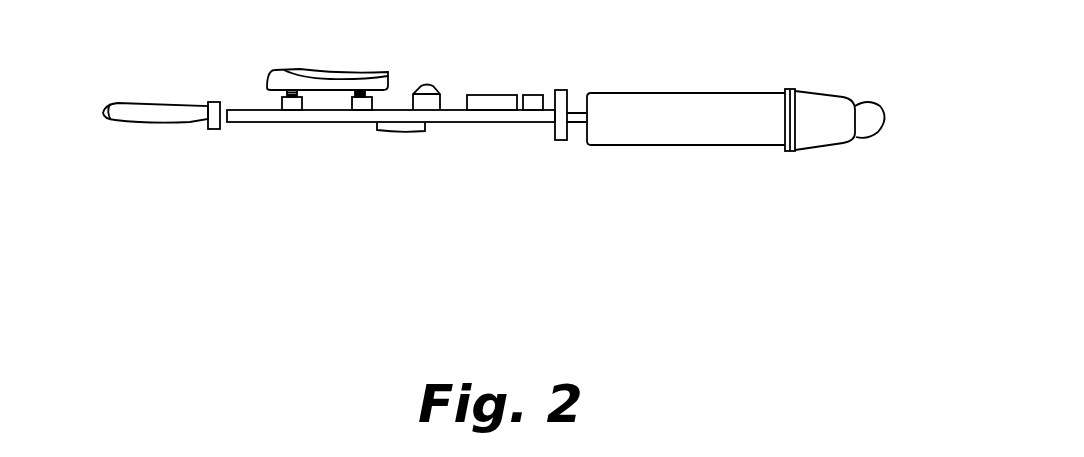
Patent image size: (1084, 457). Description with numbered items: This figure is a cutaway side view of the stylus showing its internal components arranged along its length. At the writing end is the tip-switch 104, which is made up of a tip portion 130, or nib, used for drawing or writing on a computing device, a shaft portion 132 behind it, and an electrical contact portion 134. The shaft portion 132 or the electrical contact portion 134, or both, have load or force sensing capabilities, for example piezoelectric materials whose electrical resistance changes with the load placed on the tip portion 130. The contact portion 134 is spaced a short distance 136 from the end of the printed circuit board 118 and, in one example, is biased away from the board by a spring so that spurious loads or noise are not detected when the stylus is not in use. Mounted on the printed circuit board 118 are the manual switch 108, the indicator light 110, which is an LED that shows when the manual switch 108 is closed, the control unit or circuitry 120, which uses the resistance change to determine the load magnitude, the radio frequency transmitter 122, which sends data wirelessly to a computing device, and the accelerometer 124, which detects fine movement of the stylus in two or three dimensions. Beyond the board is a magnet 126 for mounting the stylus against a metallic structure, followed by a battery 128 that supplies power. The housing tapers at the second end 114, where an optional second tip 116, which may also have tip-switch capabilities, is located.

The tip-switch 104 is at (131, 128).
The manual switch 108 is at (358, 78).
The indicator light 110 is at (422, 88).
The second end 114 is at (824, 107).
The second tip 116 is at (865, 125).
The printed circuit board 118 is at (250, 115).
The control unit or circuitry 120 is at (490, 100).
The radio frequency transmitter 122 is at (538, 100).
The accelerometer 124 is at (405, 125).
The magnet 126 is at (562, 97).
The battery 128 is at (670, 103).
The tip portion 130 is at (105, 108).
The shaft portion 132 is at (168, 112).
The electrical contact portion 134 is at (213, 105).
The short distance 136 is at (236, 126).